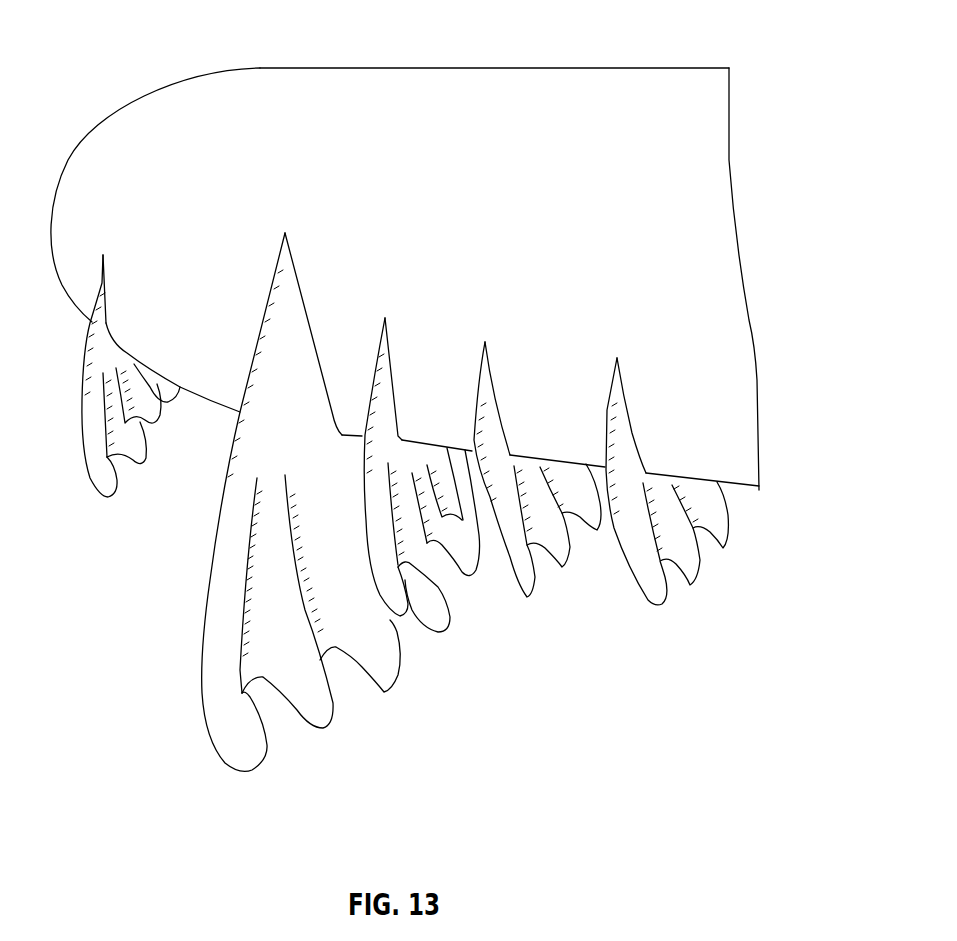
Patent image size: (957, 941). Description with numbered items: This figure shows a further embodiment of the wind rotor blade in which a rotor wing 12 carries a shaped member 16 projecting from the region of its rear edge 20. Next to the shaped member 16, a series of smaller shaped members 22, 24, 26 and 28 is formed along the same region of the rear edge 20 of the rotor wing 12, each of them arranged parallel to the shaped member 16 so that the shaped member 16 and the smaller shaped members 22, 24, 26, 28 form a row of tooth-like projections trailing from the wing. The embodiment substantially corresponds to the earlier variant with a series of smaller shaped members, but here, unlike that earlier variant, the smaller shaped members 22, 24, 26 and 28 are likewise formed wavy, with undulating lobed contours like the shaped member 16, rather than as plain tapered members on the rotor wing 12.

The rotor wing 12 is at (620, 83).
The shaped member 16 is at (257, 762).
The rear edge 20 is at (730, 486).
The smaller shaped member 22 is at (660, 595).
The smaller shaped member 24 is at (528, 587).
The smaller shaped member 26 is at (443, 589).
The smaller shaped member 28 is at (108, 488).